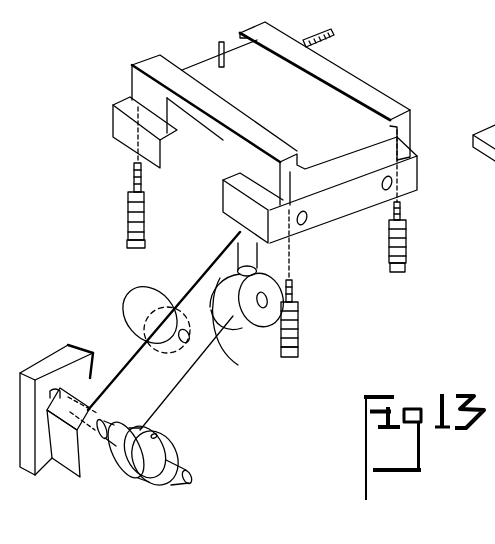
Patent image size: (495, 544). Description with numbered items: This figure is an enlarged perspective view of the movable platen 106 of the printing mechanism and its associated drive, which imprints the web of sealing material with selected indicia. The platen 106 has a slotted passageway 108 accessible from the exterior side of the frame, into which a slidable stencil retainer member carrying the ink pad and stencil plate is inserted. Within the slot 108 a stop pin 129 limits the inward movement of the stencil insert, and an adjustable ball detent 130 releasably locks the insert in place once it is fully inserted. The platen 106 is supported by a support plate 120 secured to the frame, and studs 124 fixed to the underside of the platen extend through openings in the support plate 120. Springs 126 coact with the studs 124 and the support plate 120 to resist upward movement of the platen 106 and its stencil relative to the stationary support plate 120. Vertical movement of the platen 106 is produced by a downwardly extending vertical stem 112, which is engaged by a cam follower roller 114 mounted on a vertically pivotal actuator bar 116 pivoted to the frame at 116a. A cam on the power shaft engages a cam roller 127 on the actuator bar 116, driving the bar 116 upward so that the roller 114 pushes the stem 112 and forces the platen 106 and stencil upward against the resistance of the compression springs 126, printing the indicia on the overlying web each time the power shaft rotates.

The movable platen 106 is at (406, 87).
The slotted passageway 108 is at (317, 100).
The vertical stem 112 is at (232, 366).
The cam follower roller 114 is at (233, 320).
The vertically pivotal bar 116 is at (115, 350).
The pivot 116a is at (107, 440).
The support plate 120 is at (350, 207).
The studs 124 is at (146, 242).
The springs 126 is at (144, 216).
The cam roller 127 is at (150, 287).
The stop pin 129 is at (218, 42).
The adjustable ball detent 130 is at (297, 40).